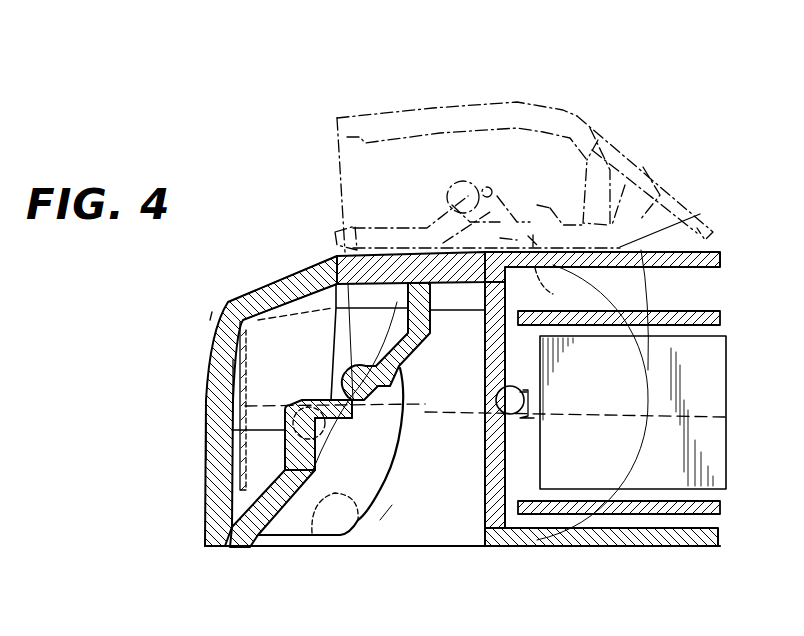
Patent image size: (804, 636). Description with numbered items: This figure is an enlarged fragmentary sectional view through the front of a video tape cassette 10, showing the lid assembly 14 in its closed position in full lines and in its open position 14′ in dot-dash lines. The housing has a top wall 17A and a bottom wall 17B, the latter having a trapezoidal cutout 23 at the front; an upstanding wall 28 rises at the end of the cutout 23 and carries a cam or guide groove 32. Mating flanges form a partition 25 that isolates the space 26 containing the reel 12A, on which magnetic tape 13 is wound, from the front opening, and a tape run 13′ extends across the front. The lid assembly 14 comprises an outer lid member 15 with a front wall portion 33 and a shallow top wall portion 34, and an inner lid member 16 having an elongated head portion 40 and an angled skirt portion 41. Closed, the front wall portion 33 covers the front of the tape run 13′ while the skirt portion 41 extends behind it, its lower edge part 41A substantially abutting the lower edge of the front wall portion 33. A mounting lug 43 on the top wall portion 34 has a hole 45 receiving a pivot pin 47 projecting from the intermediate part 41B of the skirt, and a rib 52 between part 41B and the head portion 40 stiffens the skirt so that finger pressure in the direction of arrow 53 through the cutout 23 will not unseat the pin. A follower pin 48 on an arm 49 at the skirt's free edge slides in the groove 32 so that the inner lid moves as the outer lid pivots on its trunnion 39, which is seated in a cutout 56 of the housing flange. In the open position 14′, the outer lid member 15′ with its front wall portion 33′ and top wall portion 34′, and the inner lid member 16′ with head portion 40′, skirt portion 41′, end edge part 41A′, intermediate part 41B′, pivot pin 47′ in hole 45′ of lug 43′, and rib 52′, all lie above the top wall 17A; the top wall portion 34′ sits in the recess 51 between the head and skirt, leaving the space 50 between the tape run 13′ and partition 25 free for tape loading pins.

The tape cassette 10 is at (188, 313).
The magnetic tape 13 is at (722, 379).
The tape run 13′ is at (243, 381).
The lid assembly 14 is at (190, 409).
The outer lid member 15 is at (205, 473).
The inner lid member 16 is at (328, 263).
The front wall portion 33 is at (207, 517).
The top wall portion 34 is at (245, 307).
The mounting lug 43 is at (272, 337).
The intermediate part of skirt portion 41B is at (232, 430).
The pivot pin 47 is at (300, 401).
The rib 52 is at (343, 370).
The hole 45 is at (318, 437).
The lower edge part of skirt portion 41A is at (271, 532).
The arm 49 is at (298, 525).
The follower pin 48 is at (345, 540).
The upstanding wall 28 is at (397, 533).
The cutout 23 is at (452, 518).
The cam or guide groove 32 is at (387, 466).
The skirt portion 41 is at (369, 411).
The arrow 53 is at (392, 396).
The space 50 is at (402, 335).
The head portion 40 is at (421, 256).
The cutout 56 is at (520, 390).
The pivot pin or trunnion 39 is at (512, 402).
The partition 25 is at (500, 470).
The space 26 is at (711, 279).
The reel 12A is at (703, 311).
The top wall 17A is at (700, 214).
The bottom wall 17B is at (690, 533).
The skirt portion in open position 41′ is at (548, 291).
The front wall portion in open position 33′ is at (405, 115).
The outer lid member in open position 15′ is at (430, 105).
The mounting lug in open position 43′ is at (553, 98).
The lid assembly in open position 14′ is at (557, 96).
The top wall portion in open position 34′ is at (600, 127).
The recess 51 is at (623, 183).
The head portion in open position 40′ is at (643, 167).
The inner lid member in open position 16′ is at (687, 190).
The end edge part of skirt portion in open position 41A′ is at (343, 217).
The intermediate part of skirt portion in open position 41B′ is at (452, 205).
The pivot pin in open position 47′ is at (468, 192).
The hole in open position 45′ is at (492, 192).
The rib in open position 52′ is at (540, 210).